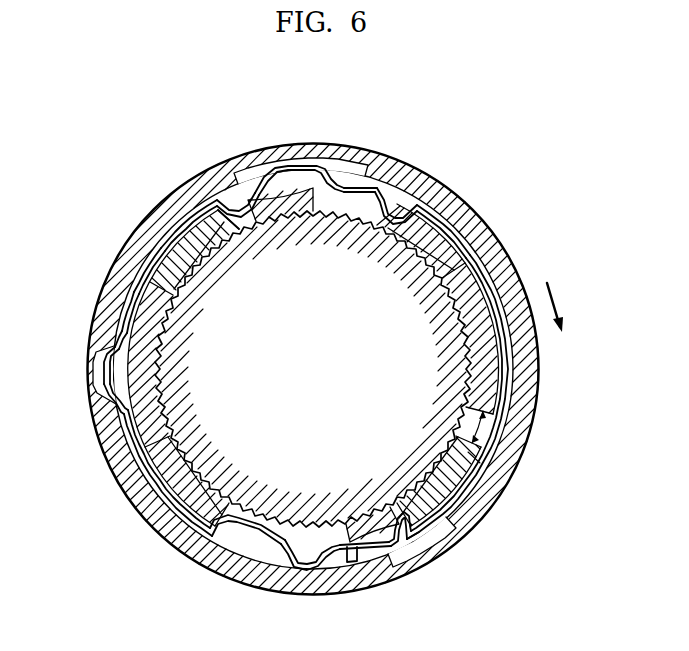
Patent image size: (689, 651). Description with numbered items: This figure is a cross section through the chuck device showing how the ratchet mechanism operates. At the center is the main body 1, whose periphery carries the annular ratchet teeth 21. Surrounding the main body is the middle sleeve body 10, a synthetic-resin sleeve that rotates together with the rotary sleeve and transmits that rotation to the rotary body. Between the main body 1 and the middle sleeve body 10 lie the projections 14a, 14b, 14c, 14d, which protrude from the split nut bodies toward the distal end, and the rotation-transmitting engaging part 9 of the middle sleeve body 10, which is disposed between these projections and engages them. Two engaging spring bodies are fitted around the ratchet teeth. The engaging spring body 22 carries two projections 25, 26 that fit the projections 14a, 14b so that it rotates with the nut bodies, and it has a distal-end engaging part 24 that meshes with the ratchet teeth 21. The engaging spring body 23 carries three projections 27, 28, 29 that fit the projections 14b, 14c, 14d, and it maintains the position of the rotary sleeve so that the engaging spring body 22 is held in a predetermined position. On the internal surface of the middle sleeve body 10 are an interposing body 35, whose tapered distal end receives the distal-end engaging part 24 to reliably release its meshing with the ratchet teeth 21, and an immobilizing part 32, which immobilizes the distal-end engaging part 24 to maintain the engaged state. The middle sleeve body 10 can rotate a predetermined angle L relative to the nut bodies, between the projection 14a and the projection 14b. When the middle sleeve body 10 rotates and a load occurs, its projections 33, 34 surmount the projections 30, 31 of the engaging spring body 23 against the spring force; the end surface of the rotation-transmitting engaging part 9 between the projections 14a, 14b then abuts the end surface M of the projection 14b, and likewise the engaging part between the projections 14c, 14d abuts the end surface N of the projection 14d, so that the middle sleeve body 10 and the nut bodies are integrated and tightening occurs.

The main body 1 is at (262, 515).
The rotation-transmitting engaging part 9 is at (132, 437).
The middle sleeve body 10 is at (540, 350).
The projection 14a is at (460, 228).
The projection 14b is at (447, 497).
The projection 14c is at (165, 530).
The projection 14d is at (185, 232).
The ratchet teeth 21 is at (140, 292).
The engaging spring body 22 is at (388, 216).
The engaging spring body 23 is at (114, 336).
The distal-end engaging part 24 is at (236, 212).
The projection 25 is at (425, 212).
The projection 26 is at (414, 536).
The projection 27 is at (407, 518).
The projection 28 is at (215, 528).
The projection 29 is at (221, 206).
The projection 30 is at (300, 570).
The projection 31 is at (102, 376).
The immobilizing part 32 is at (292, 168).
The projection 33 is at (353, 562).
The projection 34 is at (106, 410).
The interposing body 35 is at (358, 189).
The end surface N is at (142, 273).
The rotation angle L is at (478, 443).
The end surface M is at (480, 463).